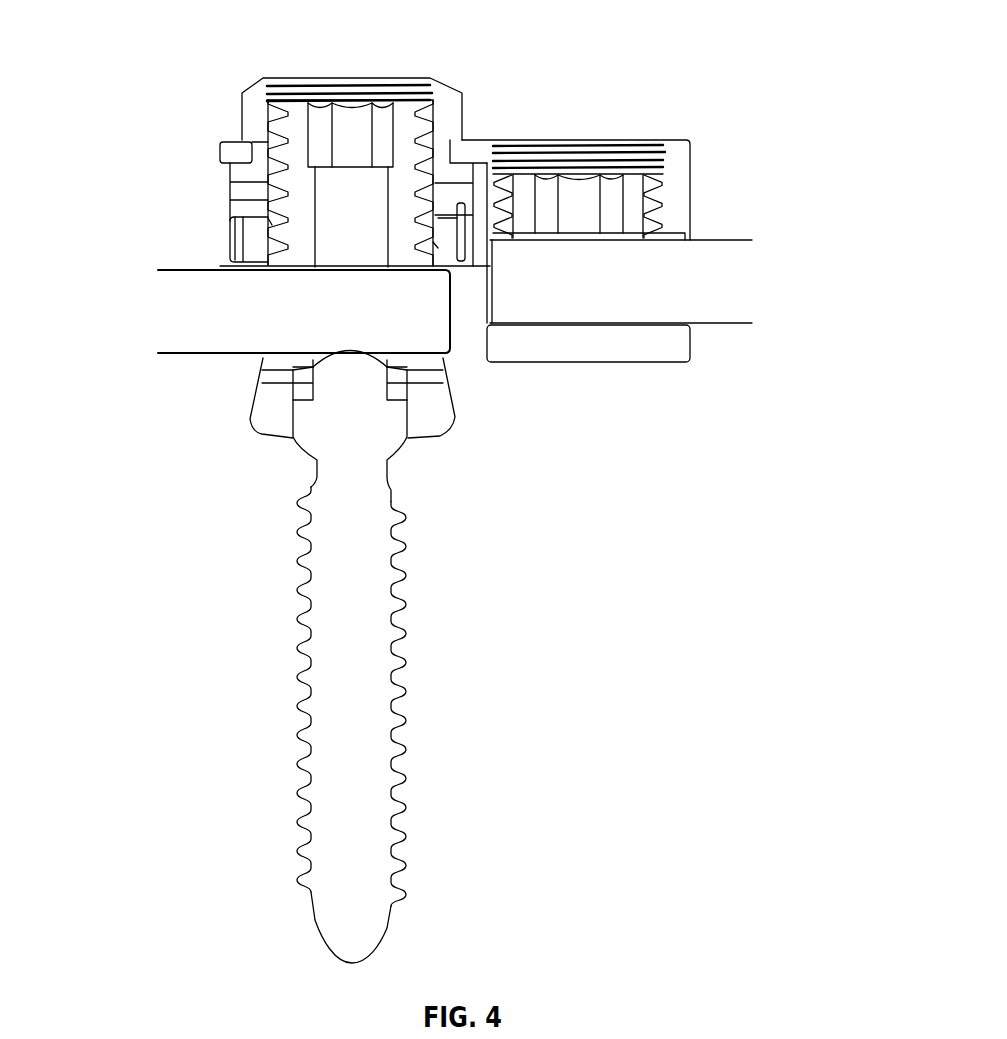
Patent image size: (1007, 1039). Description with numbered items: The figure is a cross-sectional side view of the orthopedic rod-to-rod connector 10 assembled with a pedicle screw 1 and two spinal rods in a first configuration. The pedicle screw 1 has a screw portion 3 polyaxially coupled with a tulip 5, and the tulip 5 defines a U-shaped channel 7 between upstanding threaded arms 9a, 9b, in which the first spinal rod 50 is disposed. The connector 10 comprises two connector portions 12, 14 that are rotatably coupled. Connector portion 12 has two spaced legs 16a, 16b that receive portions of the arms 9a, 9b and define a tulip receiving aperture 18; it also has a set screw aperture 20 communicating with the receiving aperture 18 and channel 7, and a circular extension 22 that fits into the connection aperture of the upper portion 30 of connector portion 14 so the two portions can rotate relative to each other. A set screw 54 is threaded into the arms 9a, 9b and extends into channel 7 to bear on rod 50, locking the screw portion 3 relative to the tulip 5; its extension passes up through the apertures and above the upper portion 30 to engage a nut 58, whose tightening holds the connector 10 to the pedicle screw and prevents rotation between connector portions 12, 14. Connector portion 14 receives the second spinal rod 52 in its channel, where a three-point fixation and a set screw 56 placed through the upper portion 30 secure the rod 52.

The orthopedic rod-to-rod connector 10 is at (740, 87).
The nut 58 is at (355, 172).
The set screw aperture 20 is at (350, 135).
The set screw 54 is at (351, 217).
The circular extension 22 is at (260, 157).
The connector portion 12 is at (249, 212).
The tulip receiving aperture 18 is at (250, 206).
The leg 16a is at (237, 223).
The threaded arm 9a is at (269, 221).
The upper portion 30 is at (562, 231).
The set screw 56 is at (579, 204).
The leg 16b is at (457, 217).
The threaded arm 9b is at (427, 242).
The second spinal rod 52 is at (745, 310).
The connector portion 14 is at (588, 343).
The first spinal rod 50 is at (214, 319).
The U-shaped channel 7 is at (268, 362).
The tulip 5 is at (268, 390).
The pedicle screw 1 is at (78, 445).
The screw portion 3 is at (337, 673).